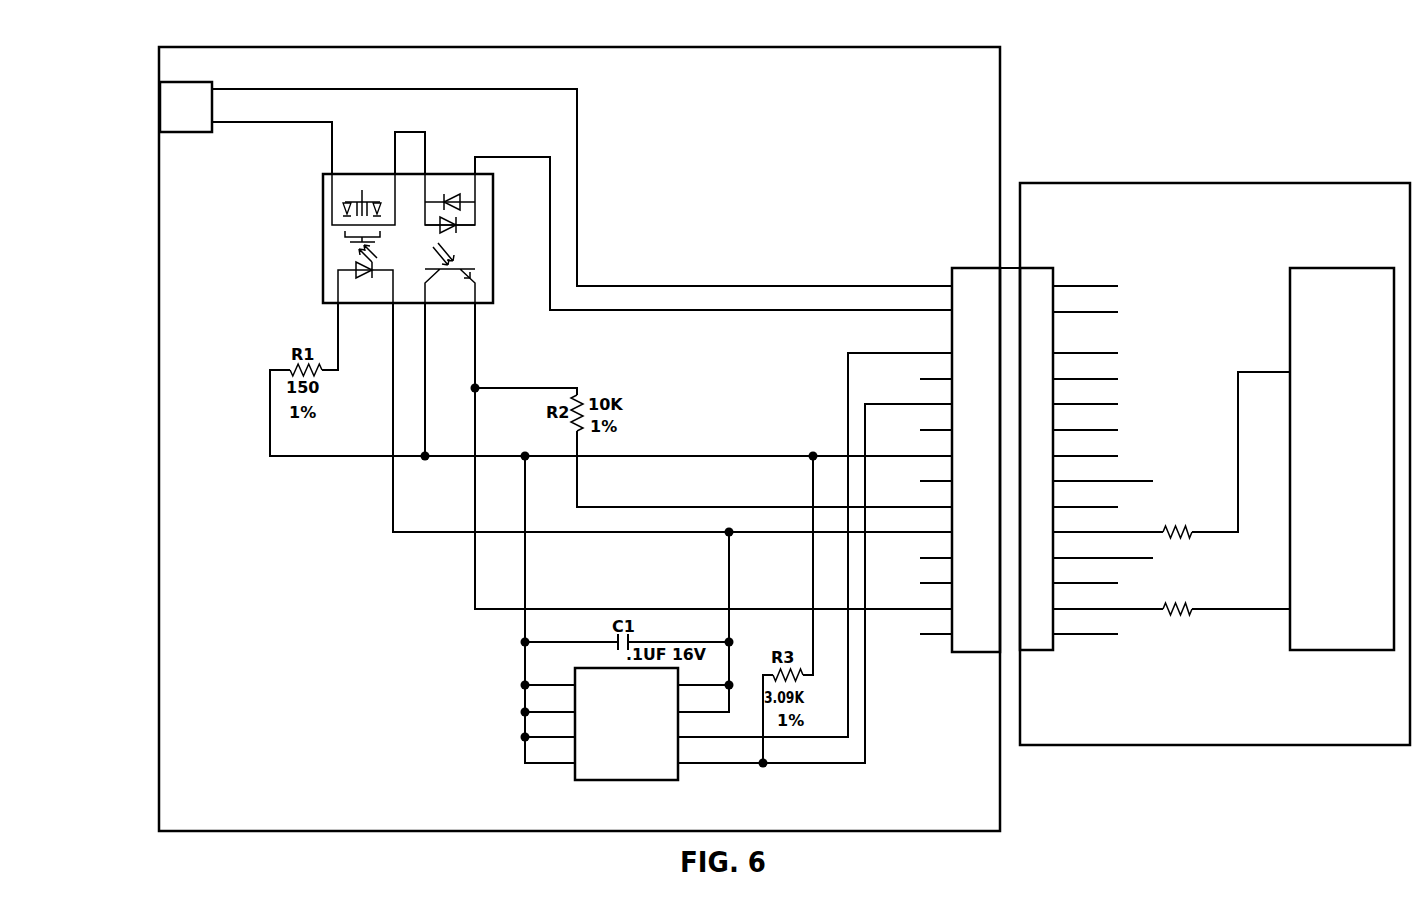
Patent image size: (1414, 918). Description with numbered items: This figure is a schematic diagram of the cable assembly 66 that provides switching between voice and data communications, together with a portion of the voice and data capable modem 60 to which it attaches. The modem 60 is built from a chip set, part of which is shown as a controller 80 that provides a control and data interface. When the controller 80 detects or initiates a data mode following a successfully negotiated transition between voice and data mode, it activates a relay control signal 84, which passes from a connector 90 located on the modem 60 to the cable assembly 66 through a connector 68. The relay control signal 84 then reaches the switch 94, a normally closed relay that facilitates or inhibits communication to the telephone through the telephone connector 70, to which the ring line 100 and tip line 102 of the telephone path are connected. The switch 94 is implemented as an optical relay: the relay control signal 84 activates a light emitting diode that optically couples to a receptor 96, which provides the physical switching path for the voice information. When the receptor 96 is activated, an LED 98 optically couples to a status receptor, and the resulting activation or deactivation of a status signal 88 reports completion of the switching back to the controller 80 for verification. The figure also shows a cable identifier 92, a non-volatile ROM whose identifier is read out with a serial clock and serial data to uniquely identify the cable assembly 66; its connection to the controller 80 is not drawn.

The voice and data capable modem 60 is at (1148, 183).
The cable assembly 66 is at (1000, 82).
The connector 68 is at (952, 268).
The telephone connector 70 is at (185, 133).
The controller 80 is at (1325, 268).
The relay control signal 84 is at (1238, 388).
The status signal 88 is at (1205, 610).
The connector 90 is at (1053, 650).
The cable identifier 92 is at (678, 780).
The switch 94 is at (493, 303).
The receptor 96 is at (362, 188).
The LED 98 is at (453, 196).
The RING line 100 is at (226, 89).
The TIP line 102 is at (262, 123).